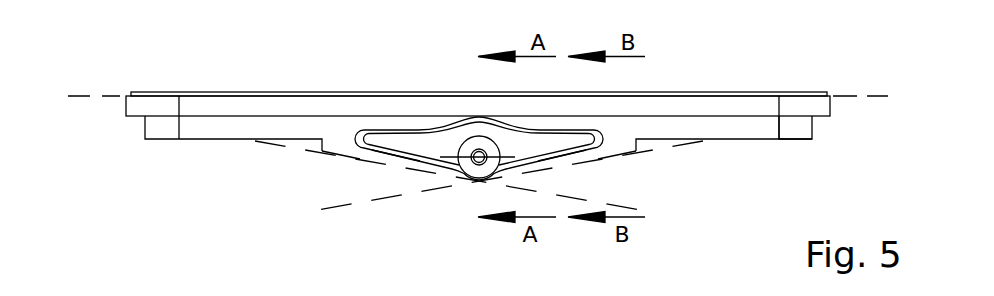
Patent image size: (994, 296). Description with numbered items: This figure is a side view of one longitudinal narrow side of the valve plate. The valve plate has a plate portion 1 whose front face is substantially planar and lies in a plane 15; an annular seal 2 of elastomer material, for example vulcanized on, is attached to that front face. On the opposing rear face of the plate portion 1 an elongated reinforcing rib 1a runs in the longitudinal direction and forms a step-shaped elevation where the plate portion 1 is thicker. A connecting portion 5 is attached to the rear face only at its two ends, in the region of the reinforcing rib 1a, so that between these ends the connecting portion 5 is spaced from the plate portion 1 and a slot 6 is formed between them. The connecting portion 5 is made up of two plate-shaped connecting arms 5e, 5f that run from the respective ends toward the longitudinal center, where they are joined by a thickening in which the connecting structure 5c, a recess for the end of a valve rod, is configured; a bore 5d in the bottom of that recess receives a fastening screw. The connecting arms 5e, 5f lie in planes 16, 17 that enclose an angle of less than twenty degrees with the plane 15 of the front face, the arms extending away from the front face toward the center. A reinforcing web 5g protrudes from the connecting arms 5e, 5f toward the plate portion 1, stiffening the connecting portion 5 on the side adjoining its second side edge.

The plate portion 1 is at (804, 165).
The reinforcing rib 1a is at (797, 125).
The annular seal 2 is at (806, 96).
The connecting portion 5 is at (343, 181).
The connecting structure 5c is at (474, 167).
The bore 5d is at (473, 162).
The connecting arm 5e is at (397, 163).
The connecting arm 5f is at (578, 160).
The reinforcing web 5g is at (433, 156).
The slot 6 is at (393, 138).
The plane 15 is at (107, 97).
The plane 16 is at (300, 148).
The plane 17 is at (655, 150).